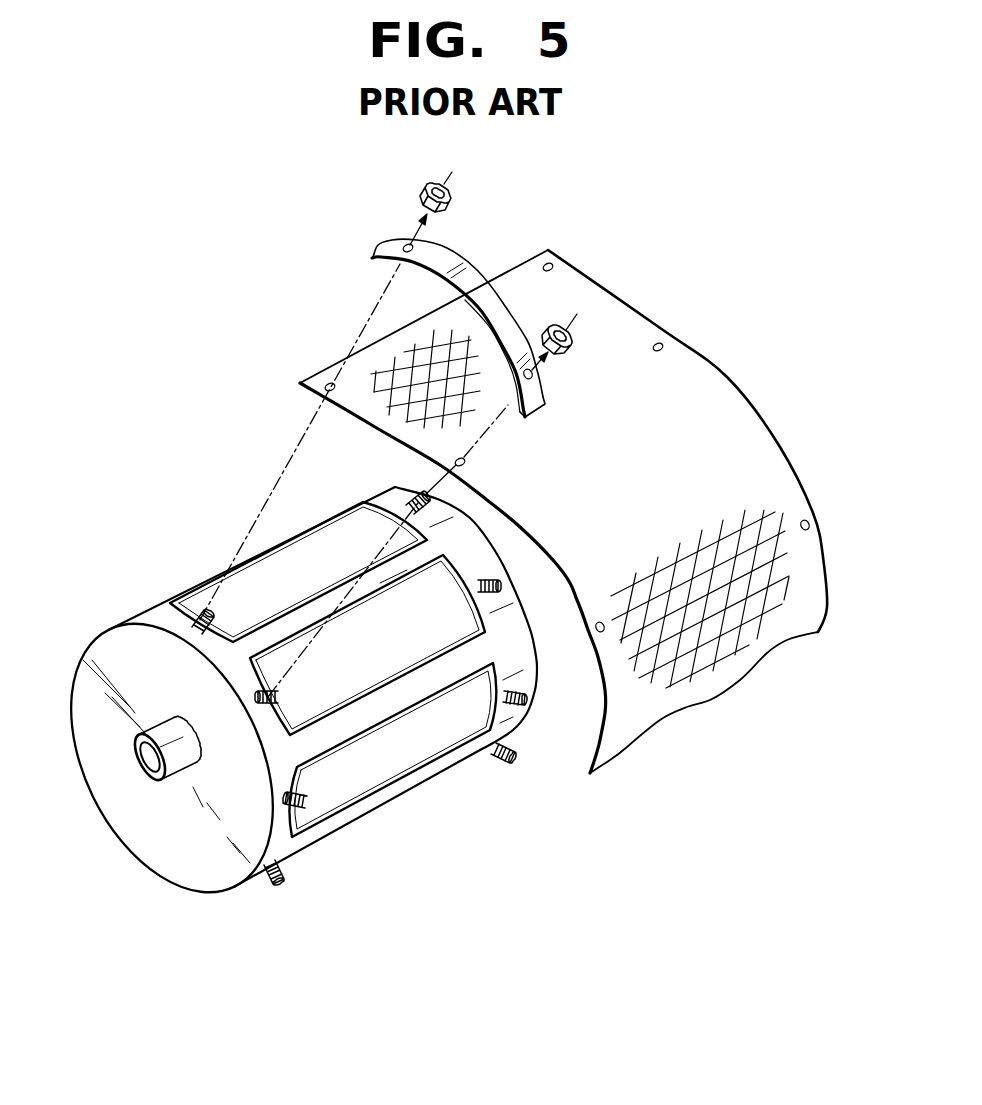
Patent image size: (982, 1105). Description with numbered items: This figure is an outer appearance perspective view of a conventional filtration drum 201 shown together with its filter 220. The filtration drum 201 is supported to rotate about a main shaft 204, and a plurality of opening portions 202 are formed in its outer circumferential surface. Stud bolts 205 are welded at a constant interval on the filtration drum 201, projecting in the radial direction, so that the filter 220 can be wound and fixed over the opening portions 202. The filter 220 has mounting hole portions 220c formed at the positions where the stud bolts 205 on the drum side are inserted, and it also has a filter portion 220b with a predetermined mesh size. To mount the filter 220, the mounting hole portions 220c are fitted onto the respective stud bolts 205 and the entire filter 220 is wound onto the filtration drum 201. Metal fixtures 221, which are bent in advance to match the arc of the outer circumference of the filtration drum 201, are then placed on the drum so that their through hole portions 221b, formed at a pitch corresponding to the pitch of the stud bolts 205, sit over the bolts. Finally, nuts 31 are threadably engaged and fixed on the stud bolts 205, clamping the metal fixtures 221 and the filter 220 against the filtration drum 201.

The nut 31 is at (455, 191).
The filtration drum 201 is at (392, 812).
The opening portion 202 is at (428, 730).
The main shaft 204 is at (178, 765).
The stud bolt 205 is at (190, 627).
The filter 220 is at (735, 377).
The filter portion 220b is at (690, 633).
The mounting hole portion 220c is at (660, 342).
The metal fixture 221 is at (468, 277).
The through hole portion 221b is at (406, 245).